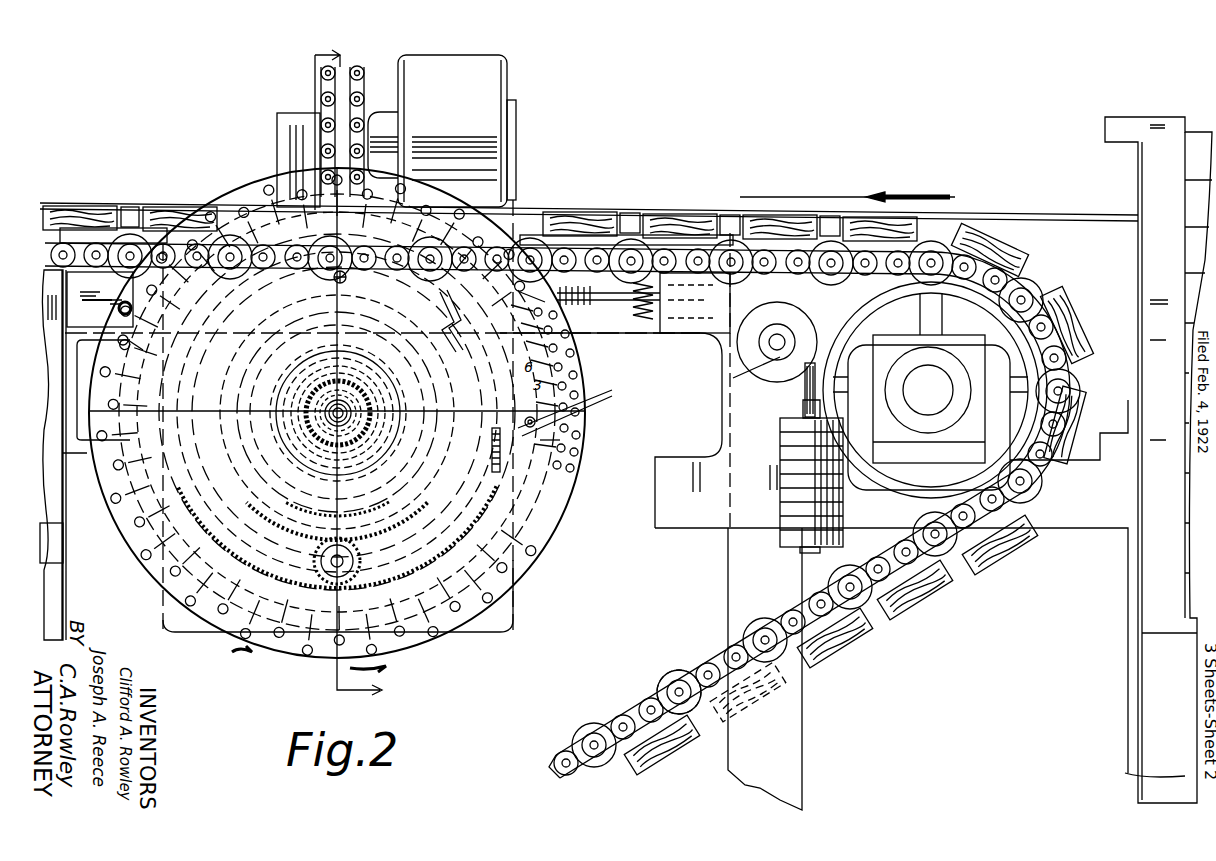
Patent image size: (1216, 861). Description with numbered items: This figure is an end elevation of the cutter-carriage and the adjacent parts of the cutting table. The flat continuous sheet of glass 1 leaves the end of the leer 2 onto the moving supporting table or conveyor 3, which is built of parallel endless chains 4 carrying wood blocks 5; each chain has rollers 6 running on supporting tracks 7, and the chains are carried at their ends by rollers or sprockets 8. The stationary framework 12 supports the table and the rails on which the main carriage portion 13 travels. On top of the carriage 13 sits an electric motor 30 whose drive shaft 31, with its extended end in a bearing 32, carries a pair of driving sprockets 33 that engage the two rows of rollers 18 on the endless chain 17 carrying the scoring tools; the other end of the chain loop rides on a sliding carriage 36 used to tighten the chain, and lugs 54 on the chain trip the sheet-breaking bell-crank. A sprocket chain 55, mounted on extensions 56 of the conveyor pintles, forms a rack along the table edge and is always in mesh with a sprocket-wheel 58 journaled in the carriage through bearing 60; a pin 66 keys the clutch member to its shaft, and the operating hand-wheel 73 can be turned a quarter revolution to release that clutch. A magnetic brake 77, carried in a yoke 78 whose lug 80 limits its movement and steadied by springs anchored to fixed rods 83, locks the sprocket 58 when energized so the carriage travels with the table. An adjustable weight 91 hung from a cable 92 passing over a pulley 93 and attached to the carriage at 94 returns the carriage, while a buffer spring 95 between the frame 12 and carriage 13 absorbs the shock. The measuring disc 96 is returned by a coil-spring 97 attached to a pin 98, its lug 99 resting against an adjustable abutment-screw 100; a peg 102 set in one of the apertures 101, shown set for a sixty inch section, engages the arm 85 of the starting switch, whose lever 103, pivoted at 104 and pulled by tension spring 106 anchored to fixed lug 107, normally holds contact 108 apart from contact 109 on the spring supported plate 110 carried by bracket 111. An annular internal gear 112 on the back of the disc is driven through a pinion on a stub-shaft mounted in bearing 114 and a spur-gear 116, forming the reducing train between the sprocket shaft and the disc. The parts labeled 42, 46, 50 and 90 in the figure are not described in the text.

The sheet of glass 1 is at (1025, 212).
The leer 2 is at (1152, 178).
The supporting table or conveyor 3 is at (1010, 268).
The endless chains 4 is at (1060, 377).
The wood blocks 5 is at (1083, 338).
The rollers 6 is at (1030, 290).
The supporting tracks 7 is at (620, 335).
The rollers or sprockets 8 is at (1030, 377).
The stationary framework 12 is at (750, 563).
The main carriage portion 13 is at (507, 608).
The endless chain 17 is at (356, 55).
The rollers 18 is at (480, 248).
The electric motor 30 is at (485, 95).
The drive shaft 31 is at (516, 132).
The bearing 32 is at (284, 157).
The driving sprockets 33 is at (364, 74).
The carriage 36 is at (333, 190).
The pin 42 is at (300, 198).
The pin 46 is at (415, 236).
The pin 50 is at (400, 196).
The lugs 54 is at (214, 266).
The sprocket chain 55 is at (650, 722).
The extensions 56 is at (681, 688).
The sprocket-wheel or gear 58 is at (450, 296).
The bearing 60 is at (133, 313).
The pin 66 is at (108, 367).
The operating hand-wheel 73 is at (365, 404).
The magnetic brake 77 is at (112, 428).
The yoke 78 is at (120, 489).
The lug 80 is at (147, 538).
The fixed rods 83 is at (220, 542).
The arm 85 is at (578, 410).
The pin 90 is at (262, 560).
The adjustable weight 91 is at (790, 478).
The cable 92 is at (805, 390).
The pulley 93 is at (770, 362).
The connection point 94 is at (573, 298).
The buffer spring 95 is at (648, 320).
The measuring disc 96 is at (548, 538).
The coil-spring 97 is at (290, 386).
The pin 98 is at (342, 280).
The lug 99 is at (417, 590).
The adjustable abutment-screw 100 is at (470, 613).
The aperture 101 is at (137, 515).
The peg or key 102 is at (300, 633).
The lever 103 is at (522, 420).
The pivot 104 is at (512, 346).
The tension spring 106 is at (492, 456).
The fixed lug 107 is at (480, 480).
The contact 108 is at (548, 432).
The contact 109 is at (552, 445).
The spring supported plate 110 is at (553, 458).
The bracket 111 is at (556, 470).
The annular internal gear 112 is at (447, 535).
The bearing 114 is at (425, 568).
The spur-gear 116 is at (520, 558).